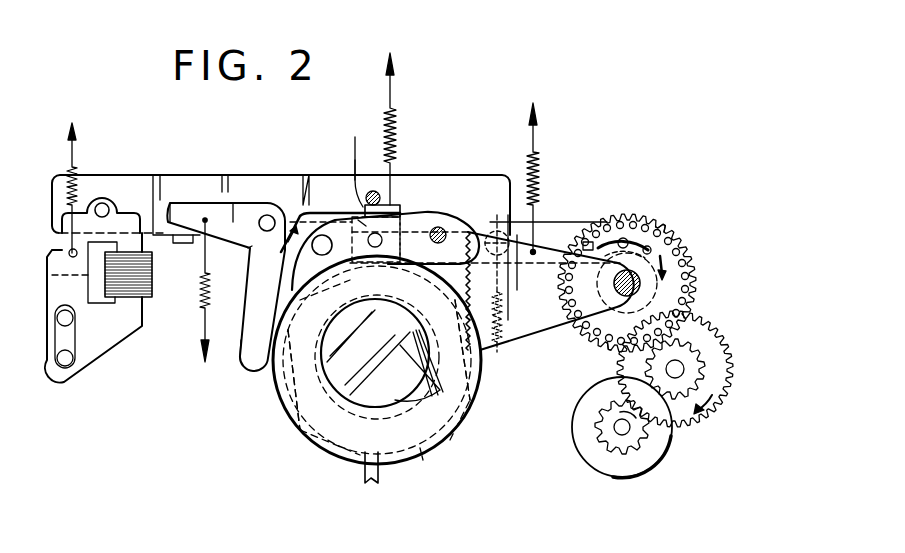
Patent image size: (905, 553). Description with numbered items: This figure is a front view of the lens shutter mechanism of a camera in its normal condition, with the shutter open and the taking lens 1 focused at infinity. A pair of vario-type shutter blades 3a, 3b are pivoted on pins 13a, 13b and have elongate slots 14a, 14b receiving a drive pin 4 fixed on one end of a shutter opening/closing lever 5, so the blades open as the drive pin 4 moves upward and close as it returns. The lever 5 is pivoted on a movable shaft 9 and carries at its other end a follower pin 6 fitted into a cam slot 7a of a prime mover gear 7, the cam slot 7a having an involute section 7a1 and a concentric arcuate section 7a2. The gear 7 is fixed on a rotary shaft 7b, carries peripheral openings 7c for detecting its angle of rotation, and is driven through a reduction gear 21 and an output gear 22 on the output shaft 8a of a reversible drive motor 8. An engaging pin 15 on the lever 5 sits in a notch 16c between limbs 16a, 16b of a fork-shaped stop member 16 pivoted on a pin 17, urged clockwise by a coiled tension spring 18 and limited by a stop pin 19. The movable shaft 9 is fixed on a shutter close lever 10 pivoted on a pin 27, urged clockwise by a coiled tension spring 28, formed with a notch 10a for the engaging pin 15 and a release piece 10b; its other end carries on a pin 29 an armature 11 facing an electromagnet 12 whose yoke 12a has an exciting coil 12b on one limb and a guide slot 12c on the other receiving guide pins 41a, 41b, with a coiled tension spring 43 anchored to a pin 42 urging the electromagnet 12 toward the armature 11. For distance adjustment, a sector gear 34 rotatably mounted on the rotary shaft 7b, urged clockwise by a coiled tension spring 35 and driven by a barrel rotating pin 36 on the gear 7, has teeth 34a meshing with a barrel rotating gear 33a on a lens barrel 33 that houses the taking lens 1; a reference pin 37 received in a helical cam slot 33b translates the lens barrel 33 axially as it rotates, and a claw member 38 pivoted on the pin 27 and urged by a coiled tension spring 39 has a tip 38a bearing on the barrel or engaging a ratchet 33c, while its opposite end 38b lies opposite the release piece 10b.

The taking lens 1 is at (335, 375).
The shutter blade 3a is at (417, 297).
The shutter blade 3b is at (330, 303).
The drive pin 4 is at (363, 207).
The shutter opening/closing lever 5 is at (548, 222).
The follower pin 6 is at (624, 238).
The prime mover gear 7 is at (583, 340).
The cam slot 7a is at (607, 245).
The involute section 7a1 is at (627, 312).
The concentric arcuate section 7a2 is at (658, 235).
The rotary shaft 7b is at (640, 297).
The openings 7c is at (612, 358).
The reversible drive motor 8 is at (656, 455).
The output shaft 8a is at (616, 427).
The movable shaft 9 is at (499, 232).
The shutter close lever 10 is at (190, 184).
The notch 10a is at (250, 250).
The release piece 10b is at (175, 253).
The armature 11 is at (115, 210).
The electromagnet 12 is at (118, 332).
The yoke 12a is at (48, 280).
The exciting coil 12b is at (152, 283).
The guide slot 12c is at (73, 328).
The pin 13a is at (425, 222).
The pin 13b is at (320, 256).
The elongate slot 14a is at (345, 230).
The elongate slot 14b is at (345, 230).
The engaging pin 15 is at (347, 162).
The stop member 16 is at (395, 220).
The limb 16a is at (375, 250).
The limb 16b is at (364, 212).
The notch 16c is at (400, 207).
The pin 17 is at (446, 230).
The coiled tension spring 18 is at (396, 118).
The stop pin 19 is at (373, 191).
The reduction gear 21 is at (727, 350).
The output gear 22 is at (608, 448).
The pin 27 is at (263, 214).
The coiled tension spring 28 is at (514, 317).
The pin 29 is at (103, 203).
The lens barrel 33 is at (348, 456).
The barrel rotating gear 33a is at (420, 378).
The cam slot 33b is at (421, 448).
The ratchet 33c is at (285, 402).
The sector gear 34 is at (546, 333).
The teeth 34a is at (469, 313).
The coiled tension spring 35 is at (530, 170).
The barrel rotating pin 36 is at (588, 227).
The reference pin 37 is at (366, 480).
The claw member 38 is at (218, 213).
The tip 38a is at (254, 372).
The opposite end 38b is at (172, 203).
The coiled tension spring 39 is at (198, 303).
The guide pin 41a is at (57, 318).
The guide pin 41b is at (57, 357).
The pin 42 is at (70, 252).
The coiled tension spring 43 is at (66, 178).